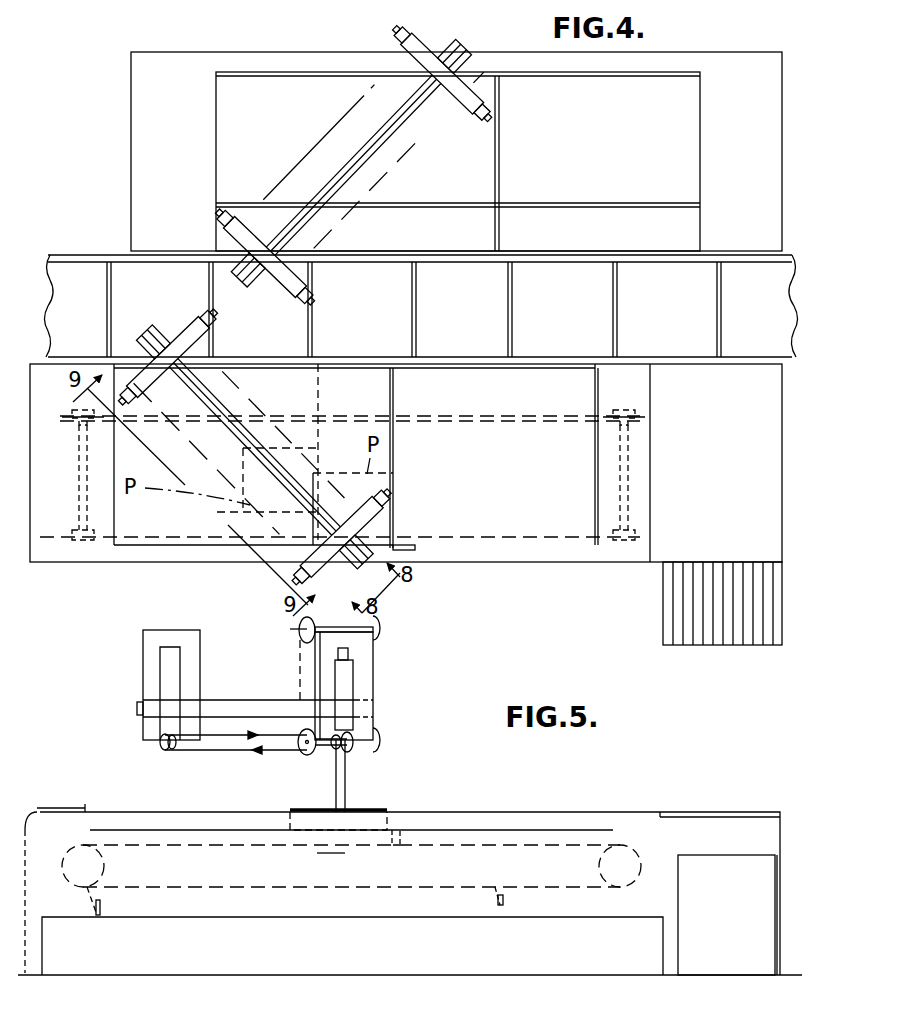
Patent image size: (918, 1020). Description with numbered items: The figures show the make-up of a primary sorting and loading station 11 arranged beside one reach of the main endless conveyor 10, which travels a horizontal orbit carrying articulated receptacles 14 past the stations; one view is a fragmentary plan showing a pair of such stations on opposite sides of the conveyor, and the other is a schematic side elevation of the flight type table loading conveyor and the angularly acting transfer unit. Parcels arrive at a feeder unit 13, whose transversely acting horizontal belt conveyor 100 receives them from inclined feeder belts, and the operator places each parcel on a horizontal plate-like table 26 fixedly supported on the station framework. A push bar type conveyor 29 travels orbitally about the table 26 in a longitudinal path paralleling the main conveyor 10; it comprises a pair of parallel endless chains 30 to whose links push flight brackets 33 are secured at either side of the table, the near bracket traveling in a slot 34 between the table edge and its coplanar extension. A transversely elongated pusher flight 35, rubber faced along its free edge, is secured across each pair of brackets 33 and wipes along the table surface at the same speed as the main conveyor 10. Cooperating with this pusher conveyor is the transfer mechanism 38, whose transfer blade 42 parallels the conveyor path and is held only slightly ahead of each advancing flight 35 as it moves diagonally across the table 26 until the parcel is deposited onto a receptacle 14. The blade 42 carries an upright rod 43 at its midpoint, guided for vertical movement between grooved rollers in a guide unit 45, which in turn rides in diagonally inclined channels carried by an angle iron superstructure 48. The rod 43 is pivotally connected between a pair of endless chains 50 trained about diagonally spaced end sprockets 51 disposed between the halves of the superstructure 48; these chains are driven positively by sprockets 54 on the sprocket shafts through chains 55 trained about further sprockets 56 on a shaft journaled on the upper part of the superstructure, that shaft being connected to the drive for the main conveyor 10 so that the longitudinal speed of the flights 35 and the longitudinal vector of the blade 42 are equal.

In FIG. 4, the main endless conveyor 10 is at (757, 358).
In FIG. 4, the primary sorting and loading station 11 is at (129, 163).
In FIG. 5, the primary sorting and loading station 11 is at (608, 812).
In FIG. 4, the feeder unit 13 is at (661, 624).
In FIG. 5, the feeder unit 13 is at (781, 840).
In FIG. 4, the receptacle 14 is at (490, 276).
In FIG. 4, the table 26 is at (297, 94).
In FIG. 5, the table 26 is at (520, 830).
In FIG. 4, the push bar type conveyor 29 is at (575, 411).
In FIG. 5, the push bar type conveyor 29 is at (600, 896).
In FIG. 5, the endless chains 30 is at (378, 888).
In FIG. 4, the push flight brackets 33 is at (398, 417).
In FIG. 5, the push flight brackets 33 is at (95, 907).
In FIG. 4, the slot 34 is at (598, 204).
In FIG. 4, the pusher flight 35 is at (322, 442).
In FIG. 5, the pusher flight 35 is at (102, 905).
In FIG. 4, the transfer mechanism 38 is at (395, 150).
In FIG. 5, the transfer mechanism 38 is at (387, 713).
In FIG. 4, the transfer blade 42 is at (378, 540).
In FIG. 5, the transfer blade 42 is at (365, 812).
In FIG. 5, the upright post or rod 43 is at (345, 790).
In FIG. 5, the guide unit 45 is at (352, 673).
In FIG. 4, the superstructure 48 is at (175, 333).
In FIG. 5, the superstructure 48 is at (193, 689).
In FIG. 5, the endless chains 50 is at (235, 752).
In FIG. 5, the end sprockets 51 is at (165, 750).
In FIG. 5, the sprockets 54 is at (305, 750).
In FIG. 5, the chains 55 is at (382, 685).
In FIG. 5, the sprockets 56 is at (380, 628).
In FIG. 4, the horizontal belt conveyor 100 is at (757, 636).
In FIG. 5, the horizontal belt conveyor 100 is at (752, 812).